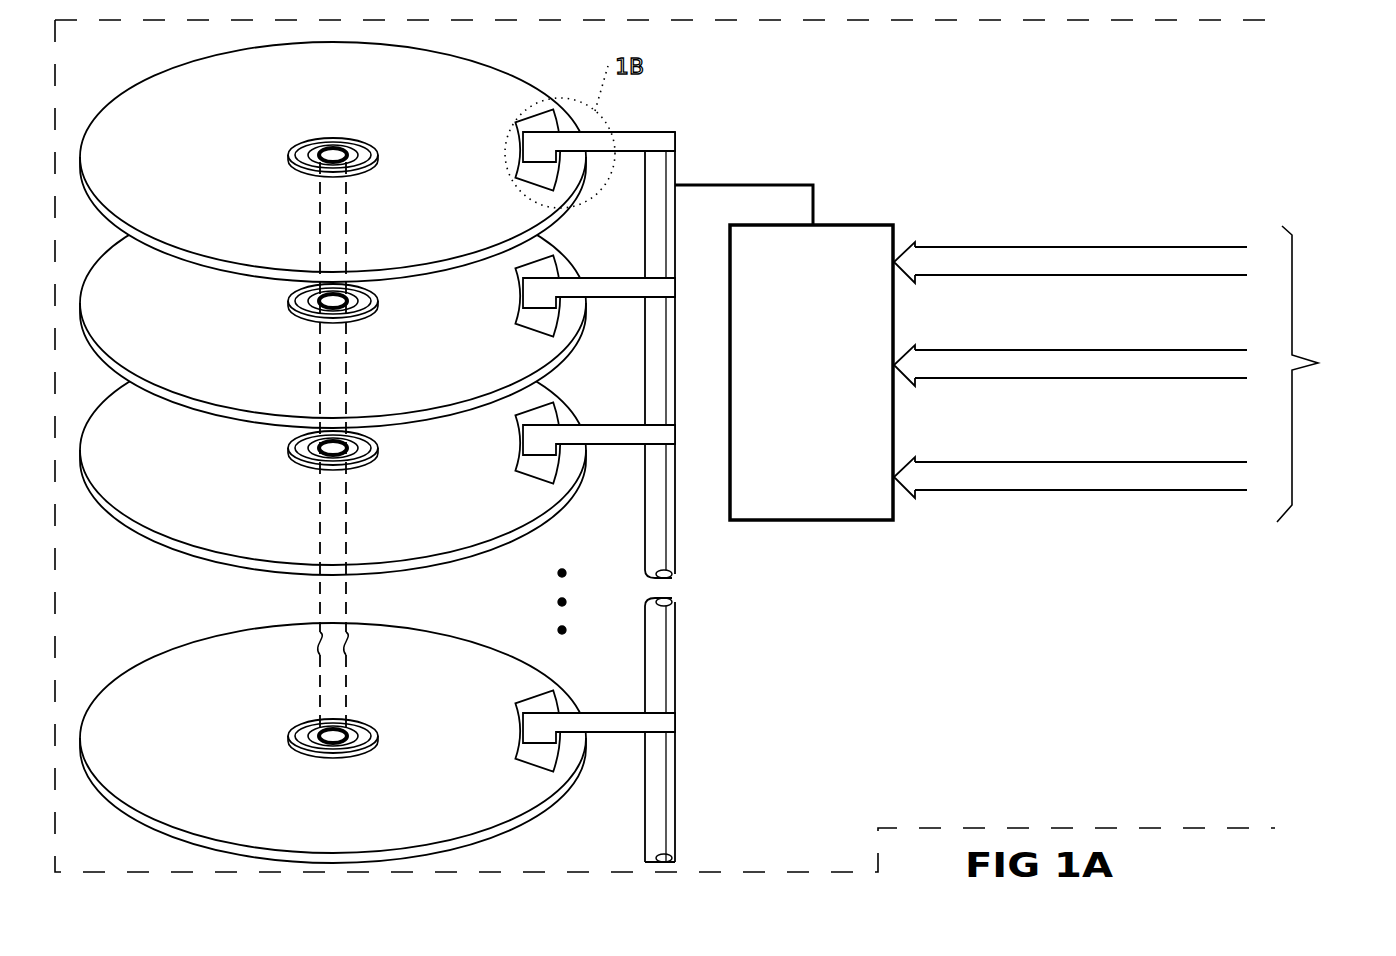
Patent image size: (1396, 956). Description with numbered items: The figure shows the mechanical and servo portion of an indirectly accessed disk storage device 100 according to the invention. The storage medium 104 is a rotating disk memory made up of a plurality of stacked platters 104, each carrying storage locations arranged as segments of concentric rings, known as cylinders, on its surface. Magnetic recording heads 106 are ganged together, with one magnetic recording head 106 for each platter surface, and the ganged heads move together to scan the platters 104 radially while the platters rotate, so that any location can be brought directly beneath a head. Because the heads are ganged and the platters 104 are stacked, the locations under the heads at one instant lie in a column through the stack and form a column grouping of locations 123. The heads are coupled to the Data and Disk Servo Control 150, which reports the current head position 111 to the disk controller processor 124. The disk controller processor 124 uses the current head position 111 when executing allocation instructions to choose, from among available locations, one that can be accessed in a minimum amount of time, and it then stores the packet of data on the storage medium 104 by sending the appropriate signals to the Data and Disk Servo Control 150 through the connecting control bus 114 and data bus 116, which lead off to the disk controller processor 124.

The indirectly accessed disk storage device 100 is at (1090, 757).
The storage medium 104 is at (188, 156).
The magnetic recording heads 106 is at (641, 132).
The column grouping of locations 123 is at (520, 160).
The Data and Disk Servo Control 150 is at (857, 225).
The current head position 111 is at (1083, 247).
The control bus 114 is at (1085, 350).
The data bus 116 is at (1090, 462).
The disk controller processor 124 is at (1333, 374).